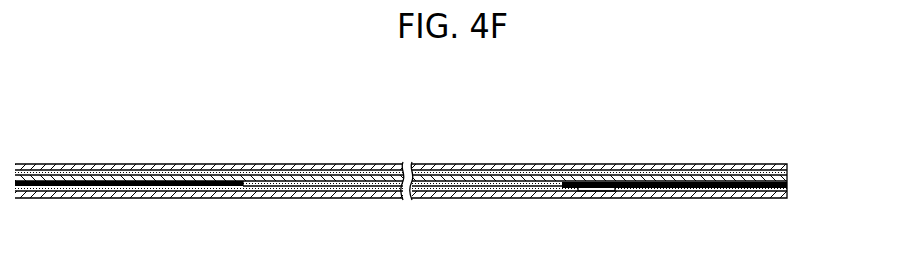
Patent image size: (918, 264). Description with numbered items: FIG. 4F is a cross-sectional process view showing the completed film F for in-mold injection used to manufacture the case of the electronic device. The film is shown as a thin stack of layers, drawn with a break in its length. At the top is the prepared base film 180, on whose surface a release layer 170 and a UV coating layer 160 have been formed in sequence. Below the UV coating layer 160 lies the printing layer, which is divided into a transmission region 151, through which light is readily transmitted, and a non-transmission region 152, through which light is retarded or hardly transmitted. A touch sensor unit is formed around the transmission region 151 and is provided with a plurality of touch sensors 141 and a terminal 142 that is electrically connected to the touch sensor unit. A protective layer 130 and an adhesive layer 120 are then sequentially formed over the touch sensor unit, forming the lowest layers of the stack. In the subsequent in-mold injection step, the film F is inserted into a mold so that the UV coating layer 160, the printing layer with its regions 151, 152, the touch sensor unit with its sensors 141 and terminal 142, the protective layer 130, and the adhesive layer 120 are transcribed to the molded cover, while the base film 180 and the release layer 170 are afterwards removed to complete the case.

The film for in-mold injection F is at (775, 151).
The base film 180 is at (787, 165).
The release layer 170 is at (787, 173).
The UV coating layer 160 is at (787, 178).
The transmission region 151 is at (439, 186).
The non-transmission region 152 is at (787, 184).
The touch sensors 141 is at (575, 188).
The terminal 142 is at (618, 188).
The protective layer 130 is at (712, 192).
The adhesive layer 120 is at (763, 197).